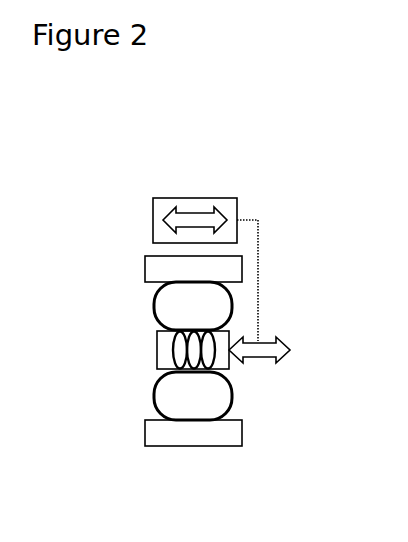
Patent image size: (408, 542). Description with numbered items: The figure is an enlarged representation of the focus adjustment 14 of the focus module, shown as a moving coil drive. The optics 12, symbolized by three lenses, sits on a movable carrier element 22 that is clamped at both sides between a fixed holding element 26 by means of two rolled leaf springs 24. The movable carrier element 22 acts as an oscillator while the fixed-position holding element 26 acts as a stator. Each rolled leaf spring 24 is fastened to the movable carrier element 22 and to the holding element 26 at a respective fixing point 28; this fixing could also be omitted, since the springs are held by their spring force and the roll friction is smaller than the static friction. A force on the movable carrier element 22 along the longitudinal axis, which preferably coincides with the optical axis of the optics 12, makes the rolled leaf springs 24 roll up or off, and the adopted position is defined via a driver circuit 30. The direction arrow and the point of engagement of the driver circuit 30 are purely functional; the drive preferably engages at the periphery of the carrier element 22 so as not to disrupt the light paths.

The optics 12 is at (191, 347).
The focus adjustment 14 is at (358, 119).
The movable carrier element 22 is at (158, 374).
The rolled leaf springs 24 is at (254, 340).
The holding element 26 is at (289, 345).
The fixing point 28 is at (162, 378).
The driver circuit 30 is at (205, 235).